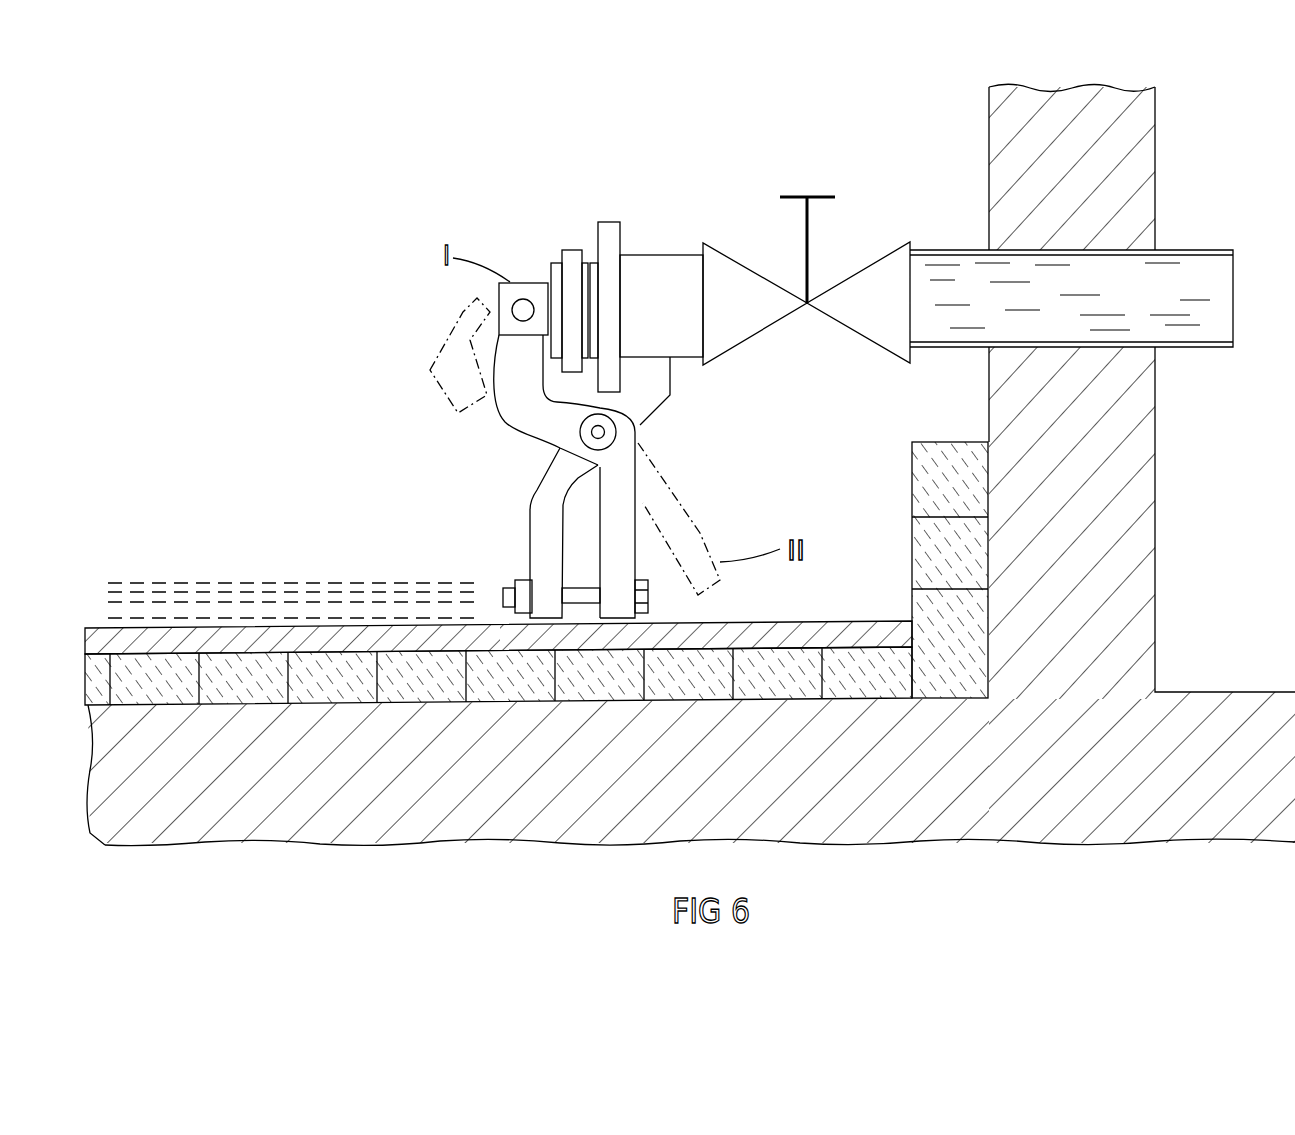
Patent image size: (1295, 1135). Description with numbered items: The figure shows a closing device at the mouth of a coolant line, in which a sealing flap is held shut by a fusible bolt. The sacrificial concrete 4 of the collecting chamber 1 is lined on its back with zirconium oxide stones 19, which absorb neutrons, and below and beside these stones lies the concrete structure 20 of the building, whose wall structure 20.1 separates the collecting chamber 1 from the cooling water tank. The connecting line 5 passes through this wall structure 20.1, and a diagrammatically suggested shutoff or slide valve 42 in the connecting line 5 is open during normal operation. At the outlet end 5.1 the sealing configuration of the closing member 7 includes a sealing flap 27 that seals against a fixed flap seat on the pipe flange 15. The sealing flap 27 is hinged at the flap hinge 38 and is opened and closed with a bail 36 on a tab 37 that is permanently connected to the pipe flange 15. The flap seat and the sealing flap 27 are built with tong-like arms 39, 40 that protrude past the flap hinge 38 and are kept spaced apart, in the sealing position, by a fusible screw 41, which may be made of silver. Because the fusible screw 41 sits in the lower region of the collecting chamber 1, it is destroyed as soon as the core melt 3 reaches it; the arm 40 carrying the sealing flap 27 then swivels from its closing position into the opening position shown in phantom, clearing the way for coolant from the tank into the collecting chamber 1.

The collecting chamber 1 is at (250, 443).
The core melt 3 is at (175, 597).
The sacrificial concrete 4 is at (306, 636).
The connecting line 5 is at (948, 250).
The outlet end 5.1 is at (668, 255).
The closing member 7 is at (506, 252).
The pipe flange 15 is at (610, 232).
The zirconium oxide stones 19 is at (350, 698).
The concrete structure 20 is at (421, 780).
The wall structure 20.1 is at (1110, 492).
The sealing flap 27 is at (573, 257).
The bail 36 is at (524, 420).
The tab 37 is at (652, 380).
The flap hinge 38 is at (598, 432).
The tong-like arm 39 is at (547, 568).
The tong-like arm 40 is at (620, 558).
The fusible screw 41 is at (583, 593).
The shutoff or slide valve 42 is at (748, 267).